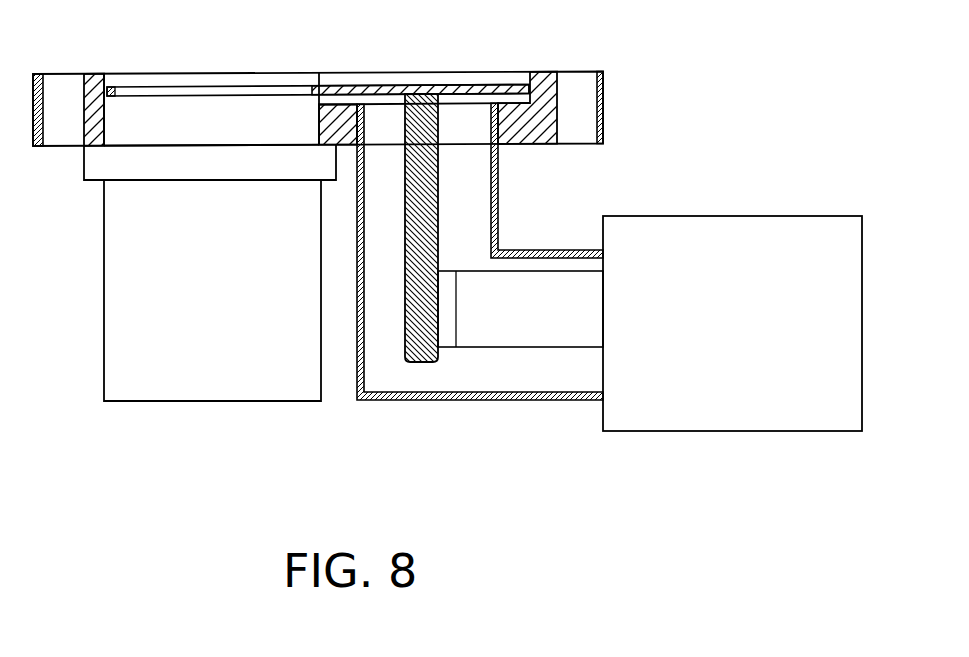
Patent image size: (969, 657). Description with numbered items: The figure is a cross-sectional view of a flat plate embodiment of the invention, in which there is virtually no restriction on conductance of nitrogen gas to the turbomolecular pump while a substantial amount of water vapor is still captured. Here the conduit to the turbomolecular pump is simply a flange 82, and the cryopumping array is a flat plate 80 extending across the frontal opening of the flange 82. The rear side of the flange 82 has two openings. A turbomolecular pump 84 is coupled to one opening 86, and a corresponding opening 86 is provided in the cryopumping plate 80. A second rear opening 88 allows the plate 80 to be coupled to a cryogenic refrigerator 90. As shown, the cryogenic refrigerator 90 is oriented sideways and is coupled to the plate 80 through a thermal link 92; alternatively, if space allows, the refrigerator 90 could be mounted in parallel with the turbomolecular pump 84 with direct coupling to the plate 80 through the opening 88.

The flat plate 80 is at (376, 86).
The flange 82 is at (605, 90).
The turbomolecular pump 84 is at (104, 257).
The opening 86 is at (212, 128).
The second rear opening 88 is at (478, 142).
The cryogenic refrigerator 90 is at (599, 448).
The thermal link 92 is at (420, 363).